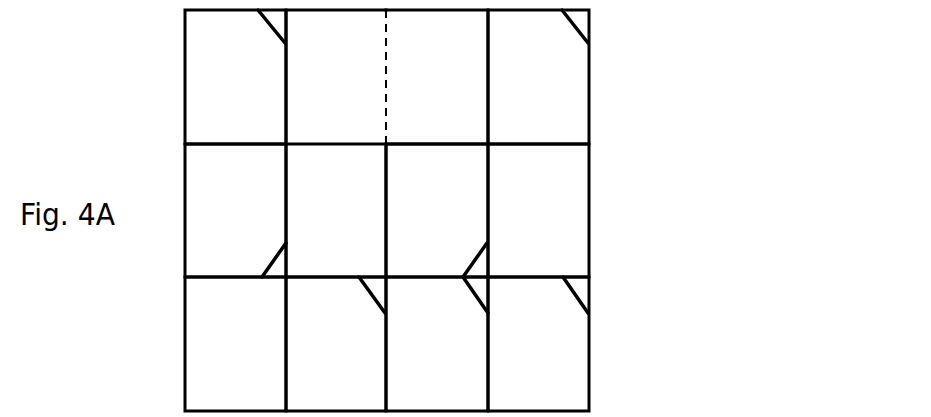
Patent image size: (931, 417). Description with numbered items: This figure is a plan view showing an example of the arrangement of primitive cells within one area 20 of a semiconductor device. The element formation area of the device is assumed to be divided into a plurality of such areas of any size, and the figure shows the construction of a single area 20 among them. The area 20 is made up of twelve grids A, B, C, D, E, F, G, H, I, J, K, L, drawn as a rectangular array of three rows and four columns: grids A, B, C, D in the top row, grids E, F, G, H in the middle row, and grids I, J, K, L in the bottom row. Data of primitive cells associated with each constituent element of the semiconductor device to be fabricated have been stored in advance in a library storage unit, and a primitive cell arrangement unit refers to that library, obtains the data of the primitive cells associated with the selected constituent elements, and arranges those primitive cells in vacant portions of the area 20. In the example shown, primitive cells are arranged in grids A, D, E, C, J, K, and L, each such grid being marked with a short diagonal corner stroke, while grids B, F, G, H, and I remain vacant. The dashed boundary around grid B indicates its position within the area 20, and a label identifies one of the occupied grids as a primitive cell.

The area 20 is at (494, 210).
The grid A is at (235, 77).
The grid B is at (336, 77).
The grid C is at (437, 77).
The grid D is at (538, 77).
The grid E is at (235, 210).
The grid F is at (336, 210).
The grid G is at (437, 210).
The grid H is at (538, 210).
The grid I is at (235, 344).
The grid J is at (336, 344).
The grid K is at (437, 344).
The grid L is at (645, 344).